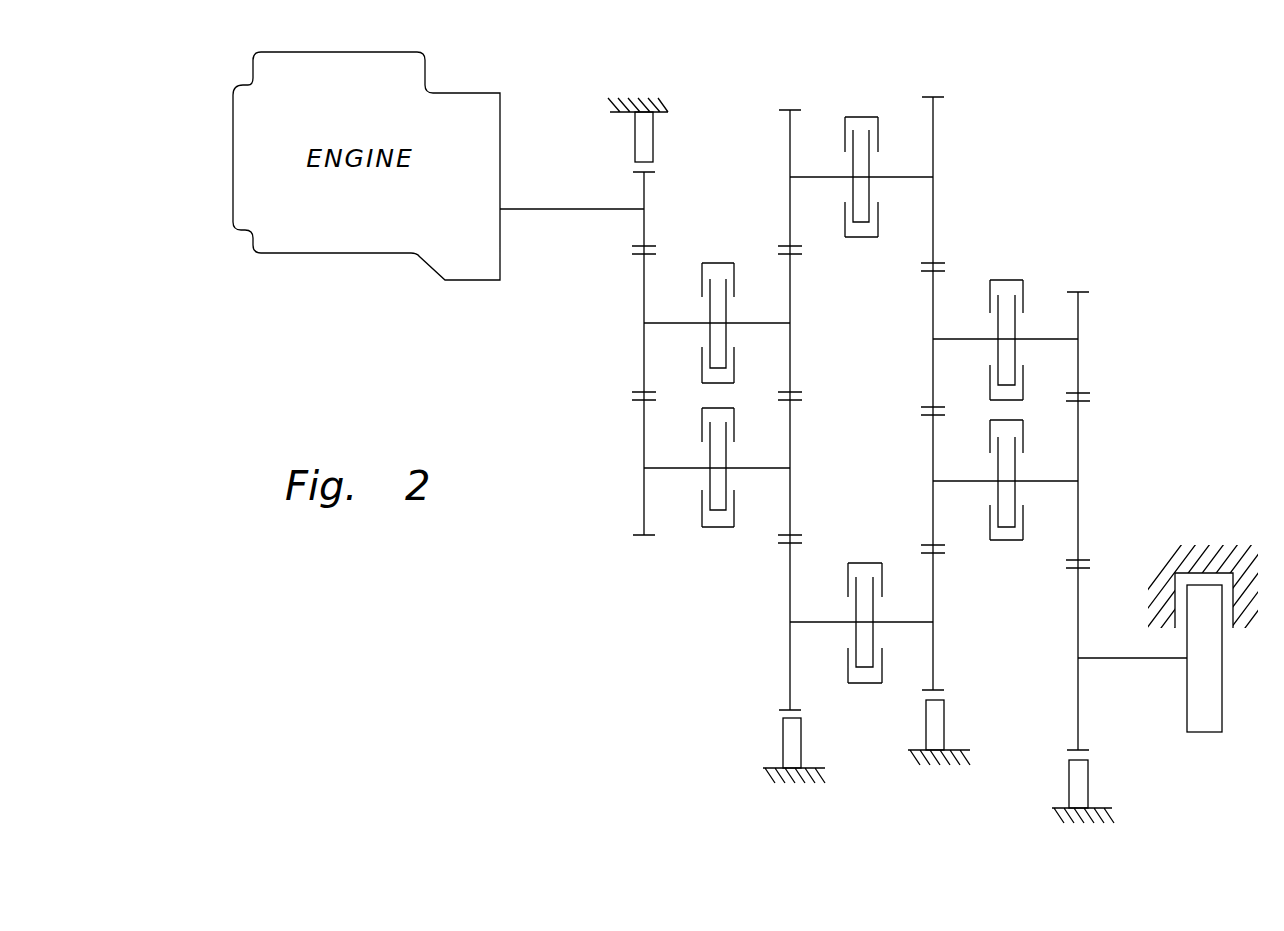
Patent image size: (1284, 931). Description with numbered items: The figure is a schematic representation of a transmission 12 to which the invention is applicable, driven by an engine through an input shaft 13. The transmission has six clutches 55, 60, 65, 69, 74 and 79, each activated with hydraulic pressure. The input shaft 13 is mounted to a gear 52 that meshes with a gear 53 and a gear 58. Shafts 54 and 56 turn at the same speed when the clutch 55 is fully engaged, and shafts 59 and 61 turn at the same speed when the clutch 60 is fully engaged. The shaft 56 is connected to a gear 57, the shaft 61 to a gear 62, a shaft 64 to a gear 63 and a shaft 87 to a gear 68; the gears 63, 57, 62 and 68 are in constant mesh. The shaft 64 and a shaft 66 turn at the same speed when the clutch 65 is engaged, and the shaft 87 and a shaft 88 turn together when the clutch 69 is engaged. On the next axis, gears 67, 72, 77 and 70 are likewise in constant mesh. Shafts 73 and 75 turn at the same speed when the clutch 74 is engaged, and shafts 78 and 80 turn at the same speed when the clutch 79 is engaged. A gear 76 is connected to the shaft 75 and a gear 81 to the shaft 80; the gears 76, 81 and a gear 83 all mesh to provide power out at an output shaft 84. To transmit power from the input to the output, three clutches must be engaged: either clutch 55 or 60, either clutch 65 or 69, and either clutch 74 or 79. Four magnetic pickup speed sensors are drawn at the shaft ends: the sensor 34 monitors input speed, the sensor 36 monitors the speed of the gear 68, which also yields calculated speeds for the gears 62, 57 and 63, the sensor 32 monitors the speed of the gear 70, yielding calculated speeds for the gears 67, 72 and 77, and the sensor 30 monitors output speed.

The transmission 12 is at (656, 632).
The input shaft 13 is at (565, 209).
The mag pickup speed sensor 30 is at (1088, 775).
The mag pickup speed sensor 32 is at (944, 718).
The mag pickup speed sensor 34 is at (653, 139).
The mag pickup speed sensor 36 is at (801, 740).
The gear 52 is at (644, 182).
The gear 53 is at (644, 287).
The shaft 54 is at (679, 322).
The clutch 55 is at (733, 241).
The shaft 56 is at (767, 322).
The gear 57 is at (790, 277).
The gear 58 is at (644, 432).
The shaft 59 is at (692, 468).
The clutch 60 is at (721, 528).
The shaft 61 is at (769, 468).
The gear 62 is at (790, 423).
The gear 63 is at (787, 118).
The shaft 64 is at (825, 176).
The clutch 65 is at (878, 117).
The shaft 66 is at (910, 176).
The gear 67 is at (933, 121).
The gear 68 is at (790, 679).
The clutch 69 is at (882, 563).
The gear 70 is at (933, 648).
The gear 72 is at (933, 303).
The shaft 73 is at (970, 339).
The clutch 74 is at (993, 280).
The shaft 75 is at (1050, 339).
The gear 76 is at (1078, 365).
The gear 77 is at (933, 443).
The shaft 78 is at (970, 481).
The clutch 79 is at (1010, 540).
The shaft 80 is at (1063, 481).
The gear 81 is at (1078, 432).
The gear 83 is at (1078, 603).
The shaft 84 is at (1137, 658).
The shaft 87 is at (825, 622).
The shaft 88 is at (910, 622).